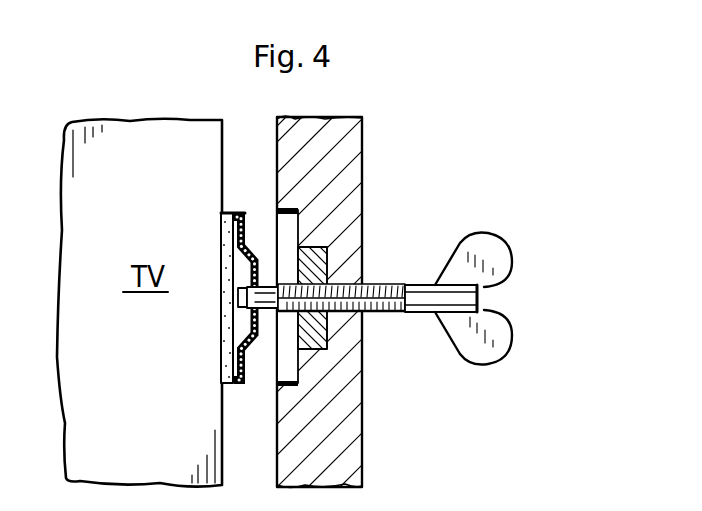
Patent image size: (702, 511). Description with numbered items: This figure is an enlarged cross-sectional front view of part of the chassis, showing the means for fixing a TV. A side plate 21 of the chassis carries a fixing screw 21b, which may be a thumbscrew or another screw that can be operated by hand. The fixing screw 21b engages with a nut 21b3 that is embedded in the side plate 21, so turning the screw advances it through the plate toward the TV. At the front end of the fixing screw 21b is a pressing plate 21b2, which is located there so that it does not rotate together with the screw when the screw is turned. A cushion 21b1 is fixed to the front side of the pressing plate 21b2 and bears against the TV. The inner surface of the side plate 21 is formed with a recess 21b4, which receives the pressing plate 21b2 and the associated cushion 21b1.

The side plate 21 is at (348, 216).
The fixing screw 21b is at (498, 251).
The cushion 21b1 is at (225, 210).
The pressing plate 21b2 is at (245, 353).
The nut 21b3 is at (318, 352).
The recess 21b4 is at (288, 210).